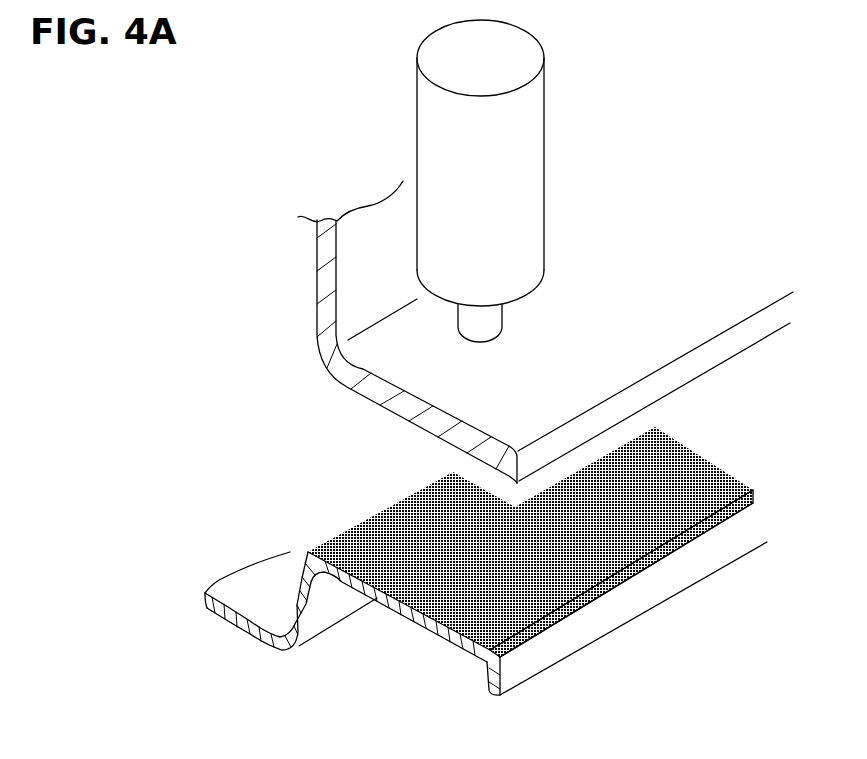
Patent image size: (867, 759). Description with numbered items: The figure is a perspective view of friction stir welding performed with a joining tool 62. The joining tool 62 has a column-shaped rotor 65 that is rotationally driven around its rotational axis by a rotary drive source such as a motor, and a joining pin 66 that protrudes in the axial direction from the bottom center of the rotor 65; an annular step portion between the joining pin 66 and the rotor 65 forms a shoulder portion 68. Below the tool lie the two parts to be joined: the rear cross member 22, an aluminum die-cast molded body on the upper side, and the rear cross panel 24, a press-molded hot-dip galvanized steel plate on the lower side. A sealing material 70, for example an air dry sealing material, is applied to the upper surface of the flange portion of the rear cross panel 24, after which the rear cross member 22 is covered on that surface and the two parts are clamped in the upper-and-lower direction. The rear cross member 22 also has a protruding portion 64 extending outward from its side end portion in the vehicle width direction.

The rear cross member 22 is at (312, 292).
The rear cross panel 24 is at (476, 605).
The joining tool 62 is at (522, 182).
The protruding portion 64 is at (533, 659).
The rotor 65 is at (520, 190).
The joining pin 66 is at (490, 343).
The shoulder portion 68 is at (540, 292).
The sealing material 70 is at (597, 551).